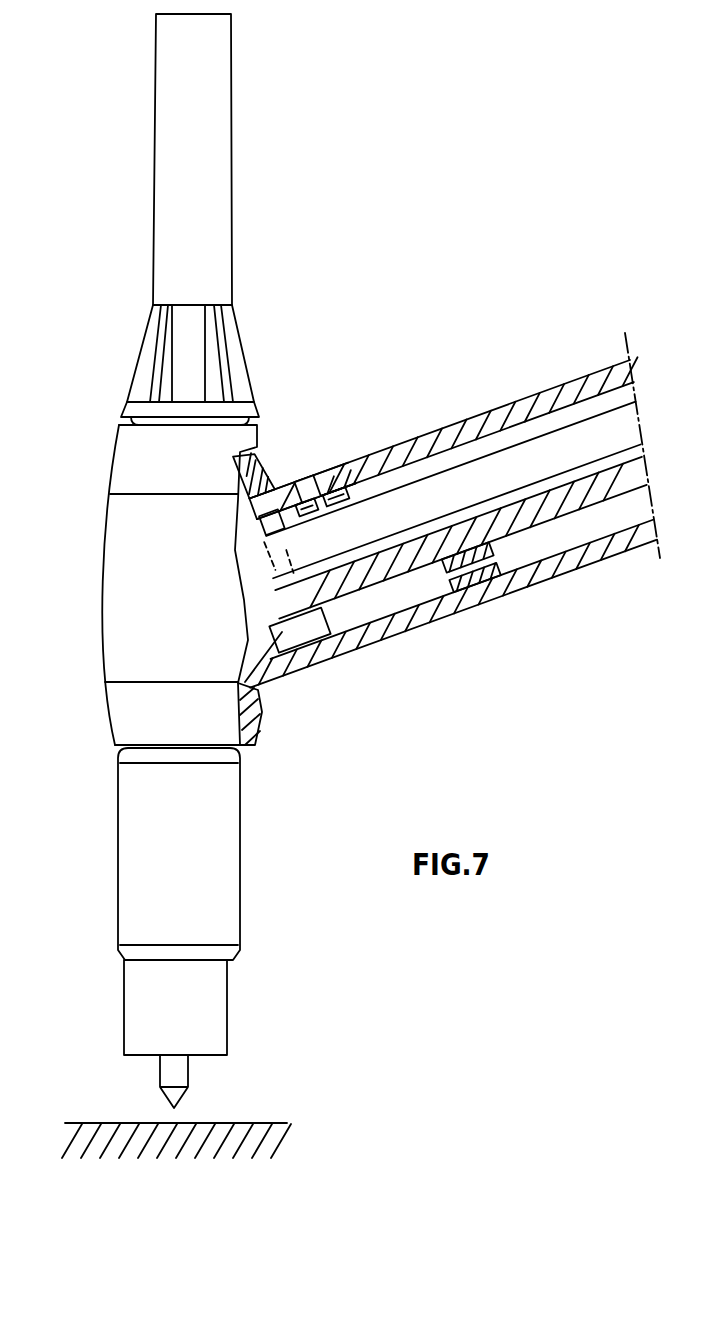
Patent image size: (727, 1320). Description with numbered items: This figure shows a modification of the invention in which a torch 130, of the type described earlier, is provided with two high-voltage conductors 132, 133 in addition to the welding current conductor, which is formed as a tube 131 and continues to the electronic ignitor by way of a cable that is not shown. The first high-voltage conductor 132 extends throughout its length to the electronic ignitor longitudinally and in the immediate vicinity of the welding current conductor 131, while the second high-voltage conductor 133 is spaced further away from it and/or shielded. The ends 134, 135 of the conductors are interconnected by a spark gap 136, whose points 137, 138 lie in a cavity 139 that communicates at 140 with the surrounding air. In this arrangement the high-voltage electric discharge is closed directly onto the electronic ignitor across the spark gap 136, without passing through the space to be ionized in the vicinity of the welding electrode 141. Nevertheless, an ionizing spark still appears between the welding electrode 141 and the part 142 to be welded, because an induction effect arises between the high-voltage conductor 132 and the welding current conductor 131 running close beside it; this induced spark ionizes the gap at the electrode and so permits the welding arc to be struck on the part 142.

The torch 130 is at (98, 664).
The tube 131 is at (483, 470).
The high-voltage conductor 132 is at (414, 462).
The high-voltage conductor 133 is at (548, 541).
The end 134 is at (372, 485).
The end 135 is at (304, 648).
The spark gap 136 is at (307, 468).
The point 137 is at (338, 488).
The point 138 is at (290, 494).
The cavity 139 is at (330, 512).
The communication opening 140 is at (309, 482).
The welding electrode 141 is at (165, 1072).
The part to be welded 142 is at (210, 1123).